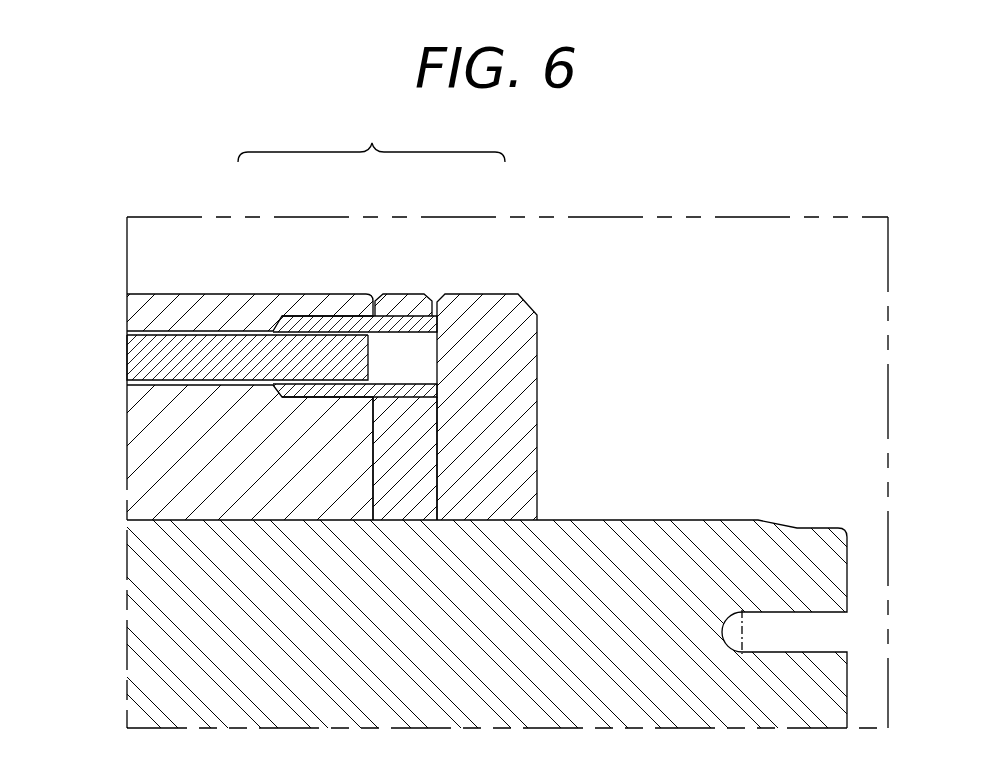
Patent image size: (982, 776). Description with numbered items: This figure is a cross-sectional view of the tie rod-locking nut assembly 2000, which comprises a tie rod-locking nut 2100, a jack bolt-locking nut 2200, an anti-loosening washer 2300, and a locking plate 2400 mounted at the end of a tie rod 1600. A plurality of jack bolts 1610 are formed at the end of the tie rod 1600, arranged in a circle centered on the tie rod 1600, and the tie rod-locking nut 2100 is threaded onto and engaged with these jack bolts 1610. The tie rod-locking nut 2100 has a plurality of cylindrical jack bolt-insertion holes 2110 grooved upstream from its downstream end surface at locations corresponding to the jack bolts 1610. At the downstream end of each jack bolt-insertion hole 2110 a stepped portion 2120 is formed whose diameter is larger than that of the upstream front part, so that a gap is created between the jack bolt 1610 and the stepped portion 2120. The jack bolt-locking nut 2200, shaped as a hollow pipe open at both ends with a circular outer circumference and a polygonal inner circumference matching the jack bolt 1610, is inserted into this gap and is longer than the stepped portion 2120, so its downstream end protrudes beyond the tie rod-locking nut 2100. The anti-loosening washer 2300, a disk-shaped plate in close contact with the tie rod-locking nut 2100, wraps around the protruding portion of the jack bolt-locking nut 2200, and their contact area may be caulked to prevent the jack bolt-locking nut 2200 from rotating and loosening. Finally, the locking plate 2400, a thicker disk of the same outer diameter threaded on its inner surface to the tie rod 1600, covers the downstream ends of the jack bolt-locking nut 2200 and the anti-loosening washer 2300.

The tie rod 1600 is at (160, 650).
The jack bolt 1610 is at (153, 355).
The tie rod-locking nut assembly 2000 is at (371, 137).
The tie rod-locking nut 2100 is at (162, 450).
The jack bolt-insertion hole 2110 is at (207, 330).
The stepped portion 2120 is at (322, 395).
The jack bolt-locking nut 2200 is at (340, 328).
The anti-loosening washer 2300 is at (408, 305).
The locking plate 2400 is at (480, 305).